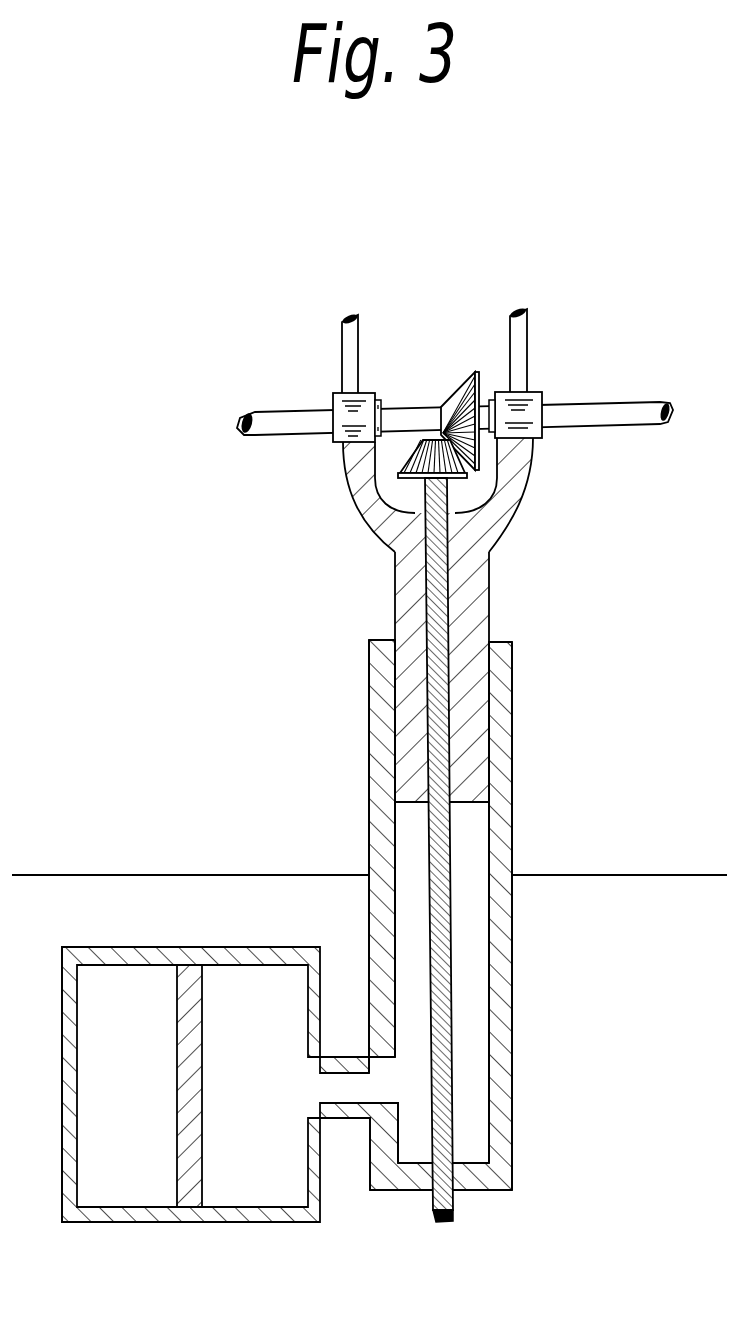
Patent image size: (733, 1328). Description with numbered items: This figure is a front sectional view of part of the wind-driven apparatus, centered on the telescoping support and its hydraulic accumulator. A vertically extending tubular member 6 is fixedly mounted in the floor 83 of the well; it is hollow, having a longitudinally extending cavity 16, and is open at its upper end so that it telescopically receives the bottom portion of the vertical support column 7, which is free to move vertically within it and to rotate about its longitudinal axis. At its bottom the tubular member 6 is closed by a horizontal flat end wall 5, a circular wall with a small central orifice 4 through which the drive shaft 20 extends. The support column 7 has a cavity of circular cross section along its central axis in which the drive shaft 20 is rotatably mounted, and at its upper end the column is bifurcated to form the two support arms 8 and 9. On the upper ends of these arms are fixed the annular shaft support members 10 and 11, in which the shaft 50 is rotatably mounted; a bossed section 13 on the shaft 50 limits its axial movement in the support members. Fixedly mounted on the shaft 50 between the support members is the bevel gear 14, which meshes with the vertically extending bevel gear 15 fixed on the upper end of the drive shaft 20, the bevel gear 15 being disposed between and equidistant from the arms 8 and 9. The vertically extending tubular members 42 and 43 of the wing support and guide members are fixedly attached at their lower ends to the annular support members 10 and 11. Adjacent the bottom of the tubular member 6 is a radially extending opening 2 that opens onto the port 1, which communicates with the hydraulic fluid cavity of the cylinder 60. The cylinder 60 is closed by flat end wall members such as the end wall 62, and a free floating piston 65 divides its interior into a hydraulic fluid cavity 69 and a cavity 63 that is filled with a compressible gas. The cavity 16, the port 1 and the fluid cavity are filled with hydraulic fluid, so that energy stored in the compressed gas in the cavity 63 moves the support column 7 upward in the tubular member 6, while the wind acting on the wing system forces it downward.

The port 1 is at (335, 1087).
The radially extending opening 2 is at (378, 1092).
The orifice 4 is at (453, 1197).
The horizontal flat end wall 5 is at (407, 1182).
The tubular member 6 is at (503, 710).
The vertical support column 7 is at (475, 592).
The support arm 8 is at (348, 455).
The support arm 9 is at (520, 474).
The annular shaft support member 10 is at (336, 403).
The annular shaft support member 11 is at (533, 410).
The bossed section 13 is at (381, 400).
The bevel gear 14 is at (463, 382).
The bevel gear 15 is at (412, 452).
The cavity 16 is at (473, 830).
The drive shaft 20 is at (440, 622).
The tubular member 42 is at (344, 347).
The tubular member 43 is at (525, 335).
The shaft 50 is at (603, 418).
The cylinder 60 is at (182, 1230).
The end wall member 62 is at (70, 1010).
The cavity 63 is at (123, 1180).
The piston 65 is at (184, 986).
The hydraulic fluid chamber 69 is at (263, 1178).
The floor 83 is at (160, 870).